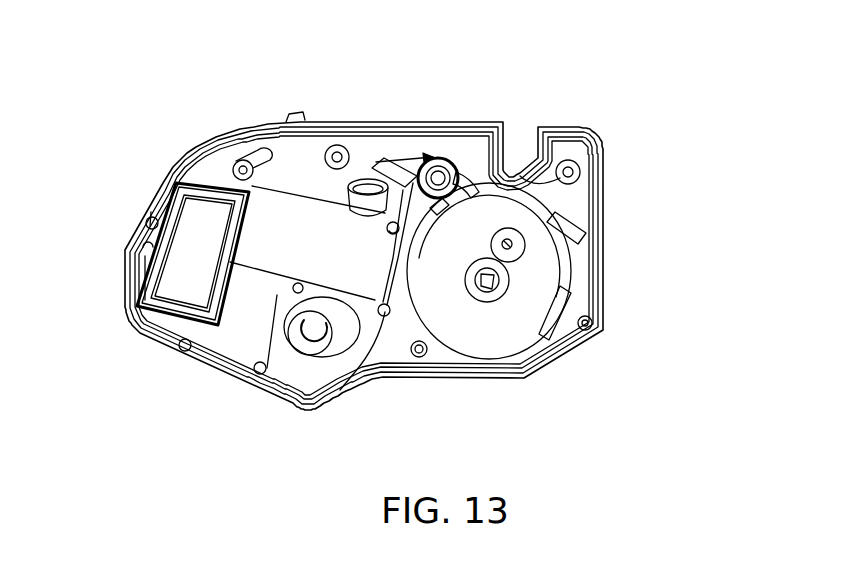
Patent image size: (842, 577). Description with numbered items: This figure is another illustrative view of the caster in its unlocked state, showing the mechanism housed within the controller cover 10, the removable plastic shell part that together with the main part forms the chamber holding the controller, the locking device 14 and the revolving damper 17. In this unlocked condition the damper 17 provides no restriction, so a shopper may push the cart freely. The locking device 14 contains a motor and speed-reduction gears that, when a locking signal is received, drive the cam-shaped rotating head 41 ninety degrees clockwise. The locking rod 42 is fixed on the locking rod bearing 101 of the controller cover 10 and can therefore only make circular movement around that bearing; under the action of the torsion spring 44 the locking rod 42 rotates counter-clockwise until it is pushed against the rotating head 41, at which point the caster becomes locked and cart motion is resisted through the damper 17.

The controller cover 10 is at (603, 147).
The locking device 14 is at (190, 165).
The revolving damper 17 is at (587, 235).
The rotating head 41 is at (362, 175).
The locking rod 42 is at (412, 153).
The torsion spring 44 is at (460, 163).
The locking rod bearing 101 is at (438, 157).